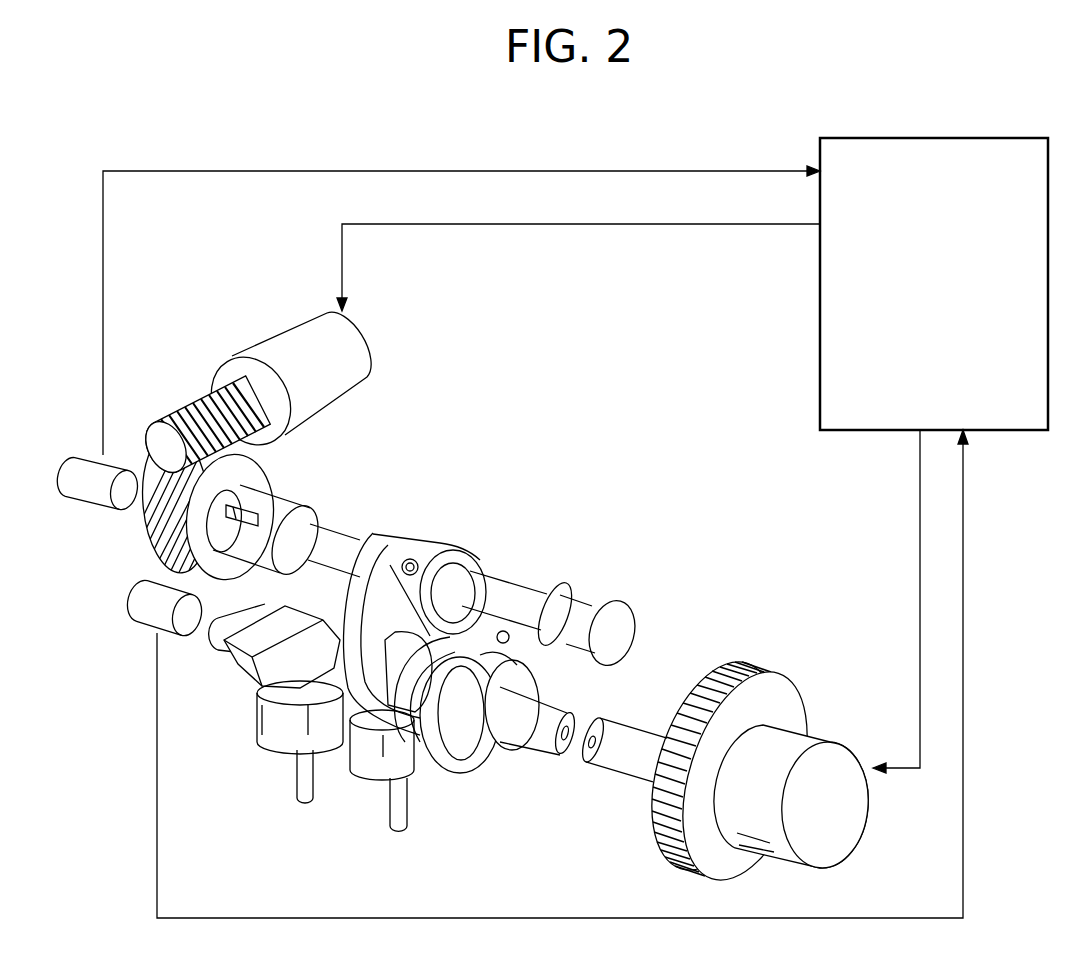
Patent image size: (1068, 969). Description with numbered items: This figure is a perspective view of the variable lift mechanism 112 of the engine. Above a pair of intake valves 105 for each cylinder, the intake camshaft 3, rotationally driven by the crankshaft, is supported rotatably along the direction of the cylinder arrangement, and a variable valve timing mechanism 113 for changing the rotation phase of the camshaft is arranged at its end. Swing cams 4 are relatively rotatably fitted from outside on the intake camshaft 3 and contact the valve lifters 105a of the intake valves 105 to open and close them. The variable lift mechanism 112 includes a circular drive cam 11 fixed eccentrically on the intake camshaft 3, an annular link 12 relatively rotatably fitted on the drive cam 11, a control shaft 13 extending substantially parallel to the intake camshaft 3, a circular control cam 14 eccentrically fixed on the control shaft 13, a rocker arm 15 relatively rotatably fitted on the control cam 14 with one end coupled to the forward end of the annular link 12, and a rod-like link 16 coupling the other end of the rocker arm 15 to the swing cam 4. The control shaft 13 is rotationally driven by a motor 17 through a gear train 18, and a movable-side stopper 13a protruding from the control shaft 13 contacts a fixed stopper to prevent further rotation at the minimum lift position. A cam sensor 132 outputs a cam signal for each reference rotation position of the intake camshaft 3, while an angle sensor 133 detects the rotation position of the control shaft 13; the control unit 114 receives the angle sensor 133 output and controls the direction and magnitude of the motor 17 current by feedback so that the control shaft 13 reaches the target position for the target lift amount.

The intake camshaft 3 is at (540, 728).
The swing cam 4 is at (232, 662).
The drive cam 11 is at (458, 770).
The annular link 12 is at (413, 773).
The control shaft 13 is at (545, 580).
The movable-side stopper 13a is at (240, 488).
The control cam 14 is at (455, 605).
The rocker arm 15 is at (430, 540).
The rod-like link 16 is at (343, 755).
The motor 17 is at (317, 397).
The gear train 18 is at (205, 397).
The intake valve 105 is at (297, 786).
The valve lifter 105a is at (260, 736).
The variable lift mechanism 112 is at (477, 525).
The variable valve timing mechanism 113 is at (840, 866).
The control unit 114 is at (820, 333).
The cam sensor 132 is at (143, 618).
The angle sensor 133 is at (67, 455).